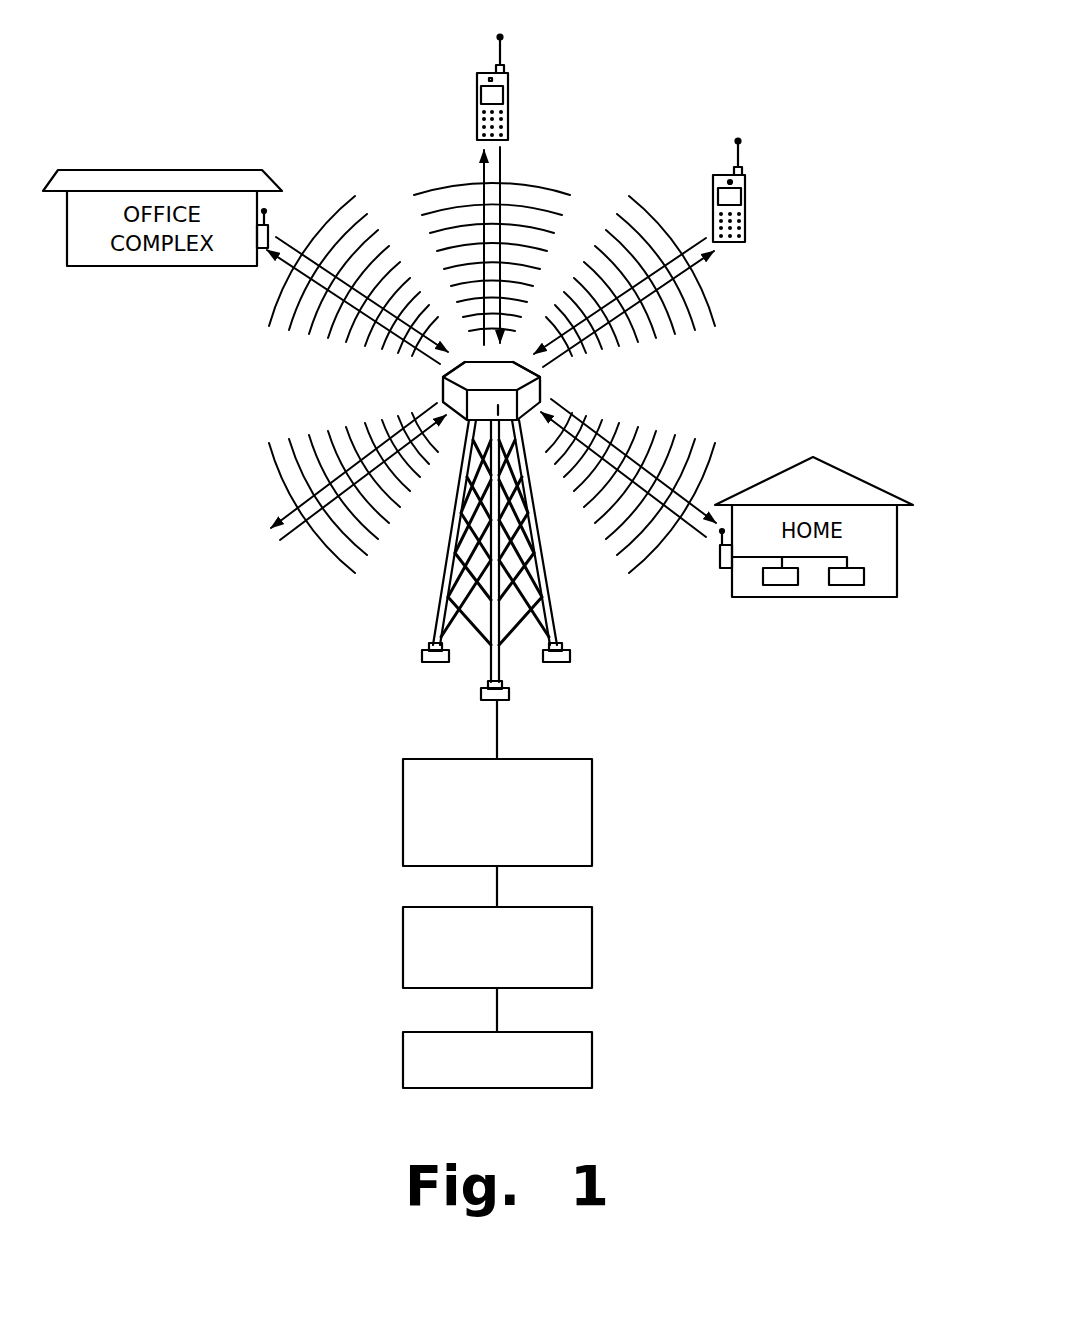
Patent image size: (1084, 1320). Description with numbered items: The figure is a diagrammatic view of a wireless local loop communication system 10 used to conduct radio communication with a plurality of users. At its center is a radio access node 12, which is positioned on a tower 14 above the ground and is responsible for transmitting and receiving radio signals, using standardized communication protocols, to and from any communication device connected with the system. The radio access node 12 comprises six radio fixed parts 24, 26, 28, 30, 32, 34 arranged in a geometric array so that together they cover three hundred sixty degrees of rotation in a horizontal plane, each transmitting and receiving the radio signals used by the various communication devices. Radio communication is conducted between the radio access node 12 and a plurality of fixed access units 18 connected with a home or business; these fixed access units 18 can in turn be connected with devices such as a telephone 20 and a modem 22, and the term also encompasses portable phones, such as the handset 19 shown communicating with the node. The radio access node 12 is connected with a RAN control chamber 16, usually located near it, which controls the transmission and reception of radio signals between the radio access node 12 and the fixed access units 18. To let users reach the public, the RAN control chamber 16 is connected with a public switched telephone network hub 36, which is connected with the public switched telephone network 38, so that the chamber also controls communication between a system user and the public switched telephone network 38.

The wireless local loop communication system 10 is at (710, 70).
The radio access node 12 is at (455, 318).
The tower 14 is at (548, 550).
The RAN control chamber 16 is at (592, 759).
The fixed access units 18 is at (268, 237).
The mobile handset 19 is at (477, 112).
The telephone 20 is at (783, 586).
The modem 22 is at (847, 586).
The radio fixed part 24 is at (540, 400).
The radio fixed part 26 is at (506, 425).
The radio fixed part 28 is at (443, 400).
The radio fixed part 30 is at (443, 374).
The radio fixed part 32 is at (509, 352).
The radio fixed part 34 is at (540, 373).
The public switched telephone network hub 36 is at (592, 907).
The public switched telephone network 38 is at (592, 1032).